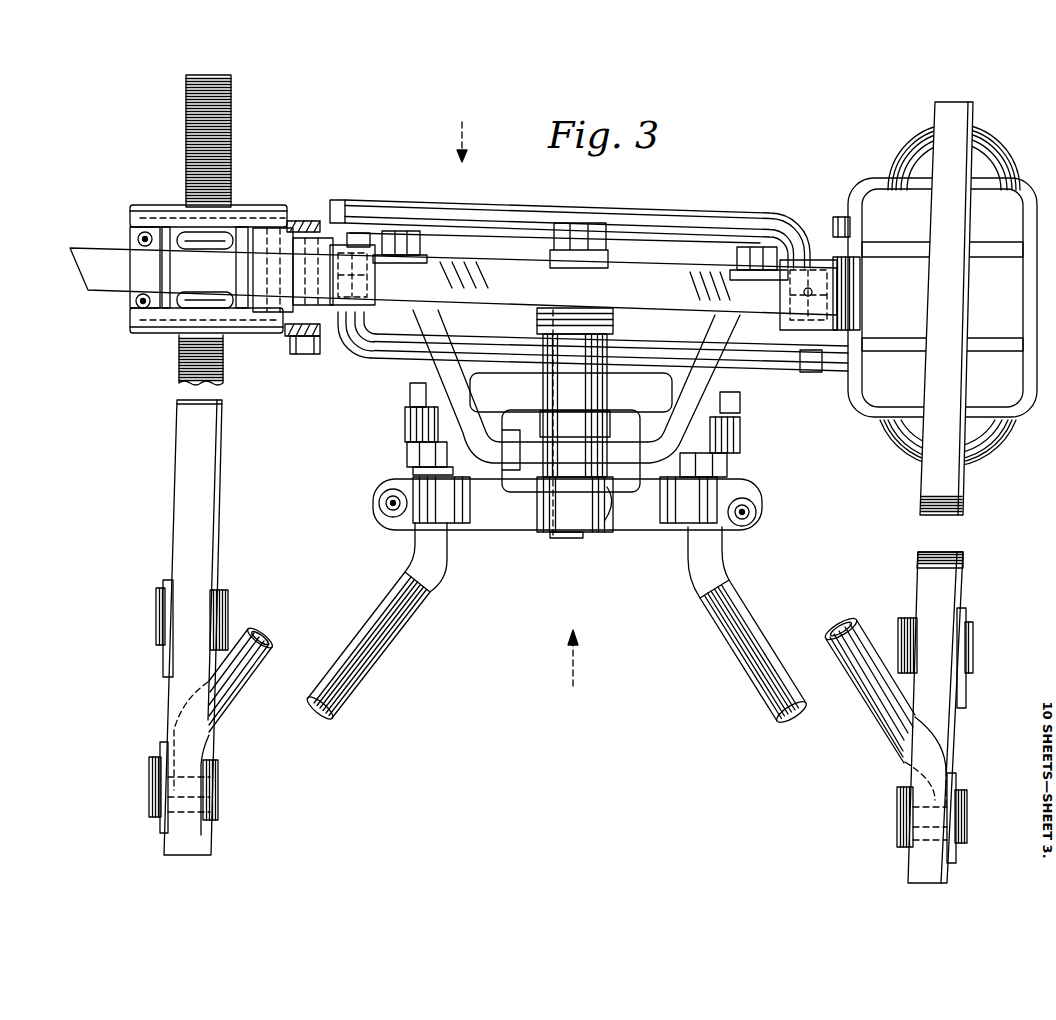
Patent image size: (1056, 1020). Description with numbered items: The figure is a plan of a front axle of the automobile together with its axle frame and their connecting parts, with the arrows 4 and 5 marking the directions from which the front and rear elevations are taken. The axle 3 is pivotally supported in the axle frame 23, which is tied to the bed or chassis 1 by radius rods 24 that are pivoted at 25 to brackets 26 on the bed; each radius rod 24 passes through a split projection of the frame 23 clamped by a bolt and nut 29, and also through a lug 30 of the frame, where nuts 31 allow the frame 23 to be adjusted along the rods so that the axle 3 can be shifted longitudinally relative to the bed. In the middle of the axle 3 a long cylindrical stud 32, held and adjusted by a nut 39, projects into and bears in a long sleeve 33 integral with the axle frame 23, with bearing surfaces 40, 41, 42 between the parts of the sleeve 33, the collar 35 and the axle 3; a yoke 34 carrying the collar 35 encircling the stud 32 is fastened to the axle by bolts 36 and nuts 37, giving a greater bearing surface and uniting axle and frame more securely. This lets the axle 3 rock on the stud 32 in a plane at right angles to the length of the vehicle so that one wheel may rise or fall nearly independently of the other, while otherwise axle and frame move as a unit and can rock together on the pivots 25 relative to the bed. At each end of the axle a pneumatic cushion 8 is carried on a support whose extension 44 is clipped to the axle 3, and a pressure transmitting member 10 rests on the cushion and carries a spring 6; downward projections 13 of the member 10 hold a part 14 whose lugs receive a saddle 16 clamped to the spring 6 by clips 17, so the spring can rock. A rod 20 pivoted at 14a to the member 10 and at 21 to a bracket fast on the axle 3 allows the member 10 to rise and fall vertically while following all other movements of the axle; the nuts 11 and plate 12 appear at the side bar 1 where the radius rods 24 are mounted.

The bed or chassis 1 is at (184, 497).
The axle 3 is at (90, 265).
The arrow 4 is at (458, 133).
The arrow 5 is at (578, 662).
The spring 6 is at (228, 144).
The pneumatic cushion 8 is at (1000, 141).
The pressure transmitting plate or member 10 is at (942, 297).
The nut 11 is at (158, 598).
The plate 12 is at (963, 700).
The downward projections 13 is at (287, 207).
The part 14 is at (207, 217).
The pivot of rod 20 14a is at (302, 355).
The saddle 16 is at (240, 233).
The clip 17 is at (190, 253).
The rod 20 is at (525, 212).
The pivot of rod 20 on bracket 21 is at (358, 343).
The axle frame 23 is at (660, 395).
The radius rod 24 is at (240, 650).
The pivot 25 is at (218, 790).
The bracket 26 is at (159, 750).
The bolt and nut 29 is at (379, 503).
The lug 30 is at (405, 425).
The nut 31 is at (410, 392).
The cylindrical stud 32 is at (578, 240).
The sleeve 33 is at (606, 355).
The yoke 34 is at (423, 360).
The collar 35 is at (580, 440).
The bolt 36 is at (405, 230).
The nut 37 is at (420, 232).
The nut 39 is at (602, 237).
The bearing surface 40 is at (607, 490).
The bearing surface 41 is at (540, 426).
The bearing surface 42 is at (537, 318).
The extension 44 is at (335, 236).